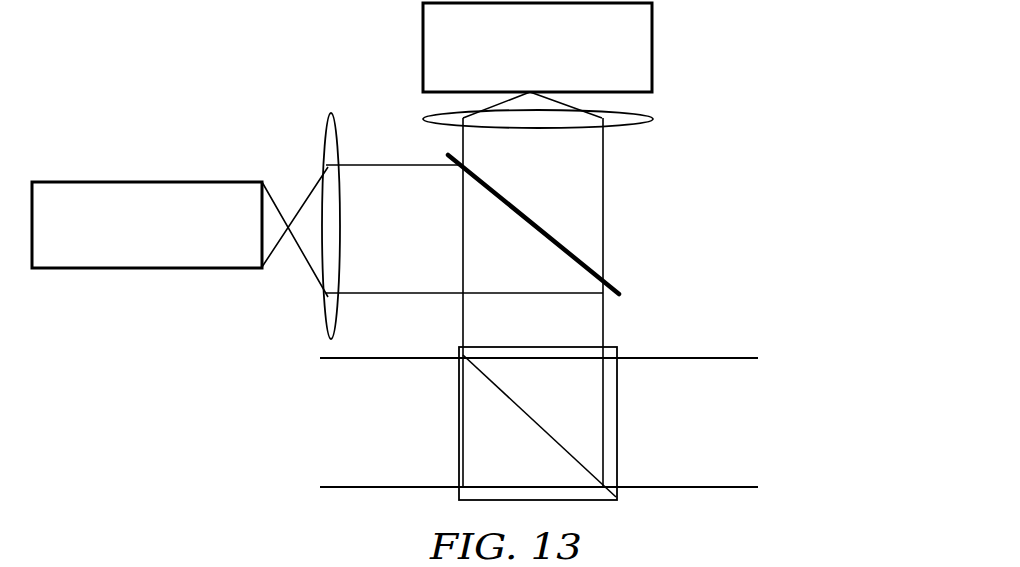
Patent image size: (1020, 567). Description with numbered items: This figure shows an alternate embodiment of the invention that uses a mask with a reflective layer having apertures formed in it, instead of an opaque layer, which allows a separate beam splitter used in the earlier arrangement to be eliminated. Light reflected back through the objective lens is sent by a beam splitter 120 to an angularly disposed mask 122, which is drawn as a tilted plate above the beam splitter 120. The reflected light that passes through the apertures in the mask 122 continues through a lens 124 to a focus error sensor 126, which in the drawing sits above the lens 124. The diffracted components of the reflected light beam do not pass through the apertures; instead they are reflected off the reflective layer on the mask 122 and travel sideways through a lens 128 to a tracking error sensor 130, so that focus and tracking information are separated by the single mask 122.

The beam splitter 120 is at (458, 434).
The mask 122 is at (587, 245).
The lens 124 is at (653, 117).
The focus error sensor 126 is at (652, 47).
The lens 128 is at (330, 333).
The tracking error sensor 130 is at (143, 268).